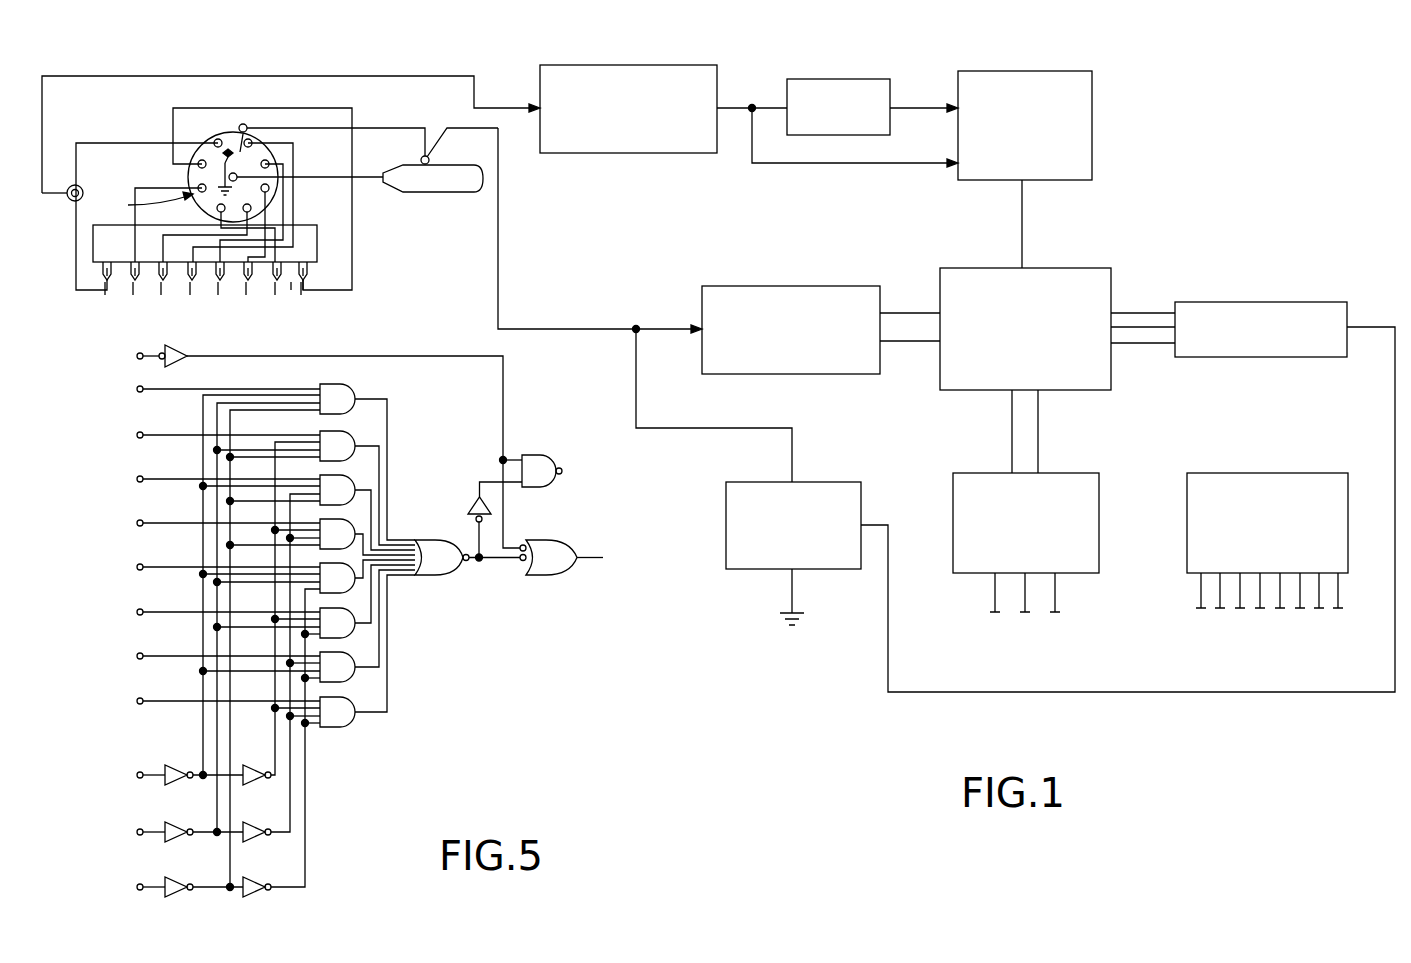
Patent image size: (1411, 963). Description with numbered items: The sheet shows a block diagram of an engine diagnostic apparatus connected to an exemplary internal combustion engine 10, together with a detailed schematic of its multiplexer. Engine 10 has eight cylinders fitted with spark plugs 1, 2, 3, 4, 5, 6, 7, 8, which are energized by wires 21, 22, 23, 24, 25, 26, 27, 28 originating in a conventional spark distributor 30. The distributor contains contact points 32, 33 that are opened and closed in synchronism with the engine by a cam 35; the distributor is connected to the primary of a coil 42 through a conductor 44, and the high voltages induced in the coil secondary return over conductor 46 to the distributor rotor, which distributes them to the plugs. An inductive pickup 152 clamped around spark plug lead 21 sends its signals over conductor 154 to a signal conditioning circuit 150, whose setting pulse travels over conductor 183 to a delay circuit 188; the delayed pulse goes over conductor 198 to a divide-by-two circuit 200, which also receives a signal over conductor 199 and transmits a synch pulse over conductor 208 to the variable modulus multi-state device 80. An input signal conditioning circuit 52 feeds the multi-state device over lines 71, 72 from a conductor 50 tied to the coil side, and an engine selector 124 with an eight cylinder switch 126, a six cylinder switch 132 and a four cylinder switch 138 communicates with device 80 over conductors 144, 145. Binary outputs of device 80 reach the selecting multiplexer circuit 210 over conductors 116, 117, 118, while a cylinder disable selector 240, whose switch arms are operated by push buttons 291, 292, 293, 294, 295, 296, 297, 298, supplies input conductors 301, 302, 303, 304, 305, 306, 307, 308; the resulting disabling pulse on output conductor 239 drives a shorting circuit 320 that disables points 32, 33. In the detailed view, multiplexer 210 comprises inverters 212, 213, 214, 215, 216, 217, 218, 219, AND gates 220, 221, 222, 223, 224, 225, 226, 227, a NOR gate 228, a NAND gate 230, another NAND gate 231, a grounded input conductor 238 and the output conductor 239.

In FIG. 1, the conductor 154 is at (320, 75).
In FIG. 1, the inductive pickup 152 is at (70, 202).
In FIG. 1, the spark plug wire 21 is at (102, 143).
In FIG. 1, the spark plug wire 22 is at (352, 228).
In FIG. 1, the spark plug wire 23 is at (155, 188).
In FIG. 1, the contact point 33 is at (238, 163).
In FIG. 1, the cam 35 is at (226, 150).
In FIG. 1, the contact point 32 is at (198, 168).
In FIG. 1, the spark distributor 30 is at (148, 225).
In FIG. 1, the spark plug wire 24 is at (220, 221).
In FIG. 1, the spark plug wire 26 is at (267, 216).
In FIG. 1, the spark plug wire 27 is at (284, 193).
In FIG. 1, the spark plug wire 28 is at (294, 163).
In FIG. 1, the internal combustion engine 10 is at (320, 232).
In FIG. 1, the spark plug 1 is at (110, 282).
In FIG. 1, the spark plug 3 is at (137, 282).
In FIG. 1, the spark plug 5 is at (165, 282).
In FIG. 1, the spark plug wire 25 is at (194, 282).
In FIG. 1, the spark plug 7 is at (222, 282).
In FIG. 1, the spark plug 8 is at (279, 282).
In FIG. 1, the spark plug 6 is at (305, 282).
In FIG. 1, the spark plug 4 is at (296, 285).
In FIG. 1, the spark plug 2 is at (308, 284).
In FIG. 1, the conductor 44 is at (383, 128).
In FIG. 1, the conductor 46 is at (366, 174).
In FIG. 1, the coil 42 is at (446, 193).
In FIG. 1, the conductor 50 is at (497, 262).
In FIG. 1, the signal conditioning circuit 150 is at (617, 65).
In FIG. 1, the conductor 183 is at (737, 107).
In FIG. 1, the conductor 199 is at (817, 165).
In FIG. 1, the delay circuit 188 is at (843, 79).
In FIG. 1, the conductor 198 is at (914, 105).
In FIG. 1, the divide-by-two circuit 200 is at (1033, 71).
In FIG. 1, the conductor 208 is at (1020, 217).
In FIG. 1, the variable modulus multi-state device 80 is at (1078, 267).
In FIG. 1, the selecting multiplexer circuit 210 is at (1282, 300).
In FIG. 5, the selecting multiplexer circuit 210 is at (495, 746).
In FIG. 1, the conductor 116 is at (1152, 308).
In FIG. 5, the conductor 116 is at (137, 775).
In FIG. 1, the conductor 117 is at (1152, 328).
In FIG. 5, the conductor 117 is at (137, 834).
In FIG. 1, the conductor 118 is at (1130, 343).
In FIG. 5, the conductor 118 is at (137, 887).
In FIG. 1, the output conductor 239 is at (1392, 397).
In FIG. 5, the output conductor 239 is at (590, 553).
In FIG. 1, the input signal conditioning circuit 52 is at (805, 286).
In FIG. 1, the conductor 71 is at (900, 312).
In FIG. 1, the conductor 72 is at (910, 343).
In FIG. 1, the shorting circuit 320 is at (819, 480).
In FIG. 1, the conductor 144 is at (1010, 423).
In FIG. 1, the conductor 145 is at (1040, 438).
In FIG. 1, the engine selector 124 is at (952, 500).
In FIG. 1, the 8 cylinder switch 126 is at (992, 600).
In FIG. 1, the 6 cylinder switch 132 is at (1025, 600).
In FIG. 1, the 4 cylinder switch 138 is at (1055, 600).
In FIG. 1, the cylinder disable selector 240 is at (1187, 513).
In FIG. 1, the push button 291 is at (1342, 597).
In FIG. 1, the push button 292 is at (1320, 600).
In FIG. 1, the push button 293 is at (1290, 603).
In FIG. 1, the push button 294 is at (1275, 605).
In FIG. 1, the push button 295 is at (1260, 600).
In FIG. 1, the push button 296 is at (1234, 600).
In FIG. 1, the push button 297 is at (1218, 600).
In FIG. 1, the push button 298 is at (1200, 590).
In FIG. 5, the grounded input conductor 238 is at (138, 353).
In FIG. 5, the inverter 218 is at (187, 362).
In FIG. 5, the input conductor 301 is at (139, 386).
In FIG. 5, the input conductor 302 is at (140, 432).
In FIG. 5, the input conductor 303 is at (142, 476).
In FIG. 5, the input conductor 304 is at (143, 520).
In FIG. 5, the input conductor 305 is at (143, 564).
In FIG. 5, the input conductor 306 is at (143, 609).
In FIG. 5, the input conductor 307 is at (143, 653).
In FIG. 5, the input conductor 308 is at (143, 698).
In FIG. 5, the inverter 212 is at (175, 763).
In FIG. 5, the inverter 213 is at (180, 822).
In FIG. 5, the inverter 214 is at (170, 902).
In FIG. 5, the inverter 215 is at (254, 787).
In FIG. 5, the inverter 216 is at (260, 843).
In FIG. 5, the inverter 217 is at (262, 895).
In FIG. 5, the AND gate 220 is at (357, 390).
In FIG. 5, the AND gate 221 is at (357, 437).
In FIG. 5, the AND gate 222 is at (357, 481).
In FIG. 5, the AND gate 223 is at (357, 524).
In FIG. 5, the AND gate 224 is at (357, 589).
In FIG. 5, the AND gate 225 is at (357, 635).
In FIG. 5, the AND gate 226 is at (357, 680).
In FIG. 5, the AND gate 227 is at (352, 727).
In FIG. 5, the NOR gate 228 is at (450, 578).
In FIG. 5, the inverter 219 is at (470, 510).
In FIG. 5, the NAND gate 230 is at (545, 455).
In FIG. 5, the NAND gate 231 is at (545, 578).